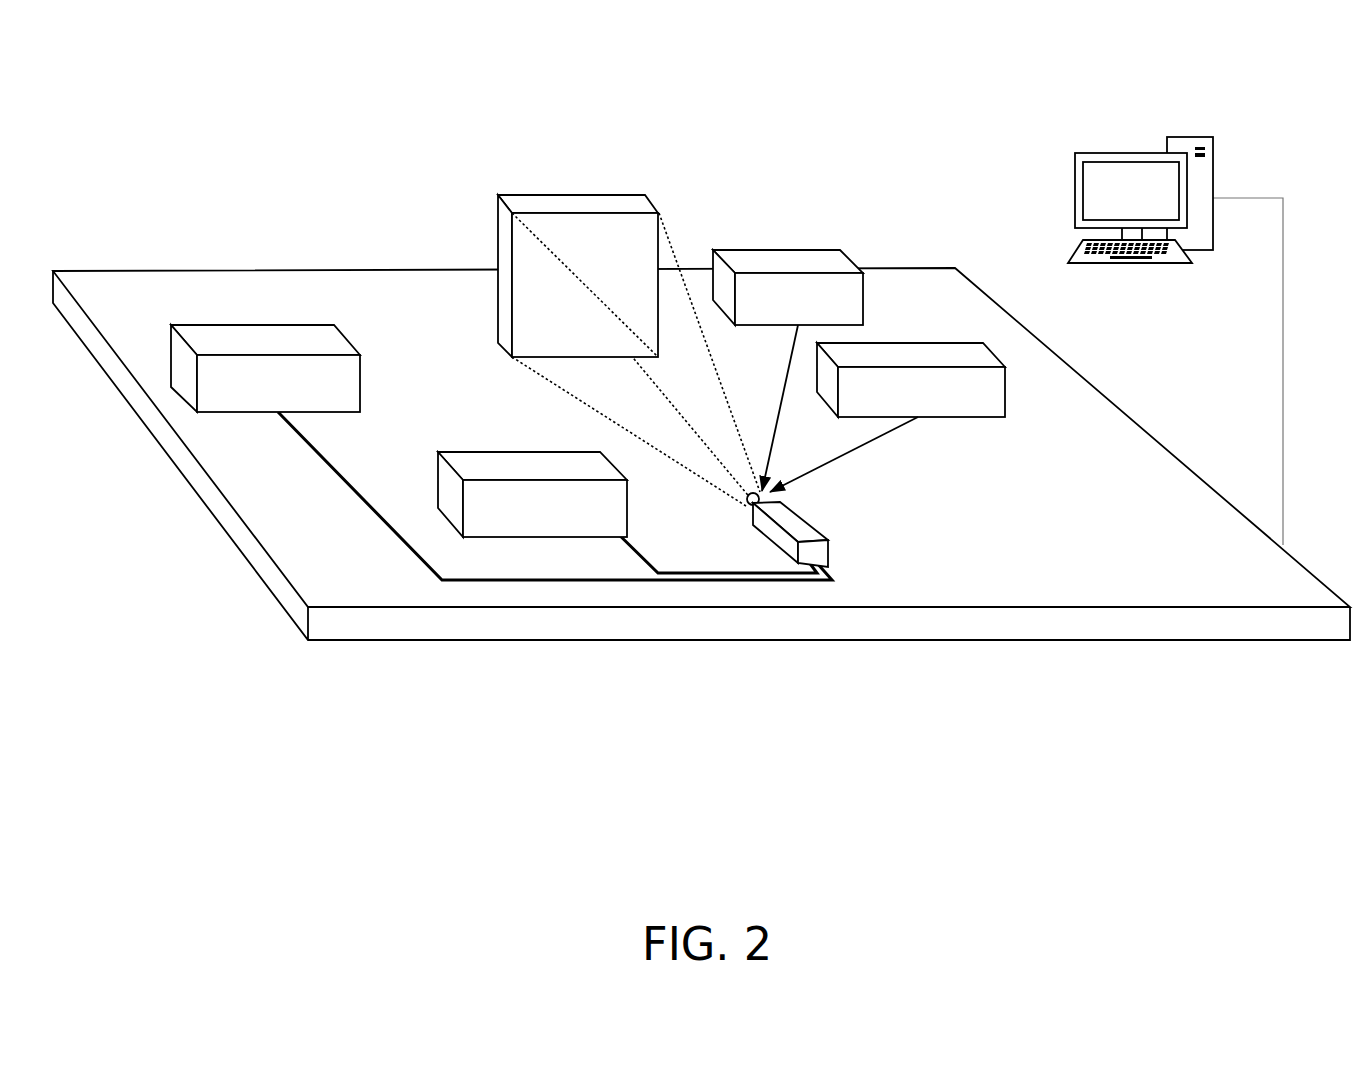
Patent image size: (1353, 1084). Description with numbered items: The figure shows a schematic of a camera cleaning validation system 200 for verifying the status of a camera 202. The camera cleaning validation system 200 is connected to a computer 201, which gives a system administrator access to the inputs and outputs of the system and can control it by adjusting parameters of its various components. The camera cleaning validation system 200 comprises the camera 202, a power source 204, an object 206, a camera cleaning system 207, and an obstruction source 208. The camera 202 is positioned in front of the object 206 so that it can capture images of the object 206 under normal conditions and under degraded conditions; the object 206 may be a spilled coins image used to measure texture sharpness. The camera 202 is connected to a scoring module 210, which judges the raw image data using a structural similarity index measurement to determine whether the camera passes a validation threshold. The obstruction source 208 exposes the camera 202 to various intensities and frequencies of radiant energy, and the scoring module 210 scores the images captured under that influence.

The camera cleaning validation system 200 is at (1238, 62).
The computer 201 is at (1125, 153).
The camera 202 is at (815, 537).
The power source 204 is at (252, 338).
The object 206 is at (573, 202).
The camera cleaning system 207 is at (952, 350).
The obstruction source 208 is at (787, 252).
The scoring module 210 is at (532, 463).